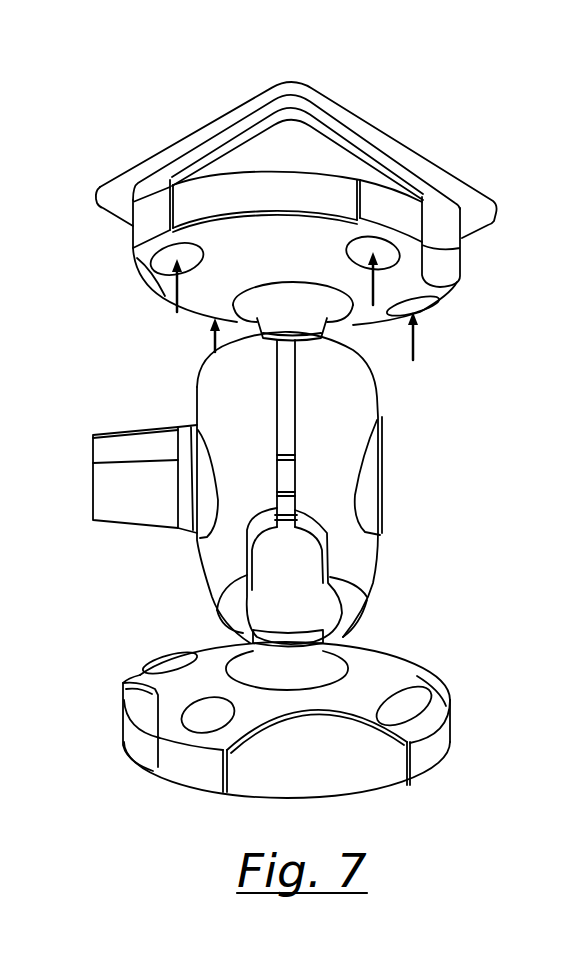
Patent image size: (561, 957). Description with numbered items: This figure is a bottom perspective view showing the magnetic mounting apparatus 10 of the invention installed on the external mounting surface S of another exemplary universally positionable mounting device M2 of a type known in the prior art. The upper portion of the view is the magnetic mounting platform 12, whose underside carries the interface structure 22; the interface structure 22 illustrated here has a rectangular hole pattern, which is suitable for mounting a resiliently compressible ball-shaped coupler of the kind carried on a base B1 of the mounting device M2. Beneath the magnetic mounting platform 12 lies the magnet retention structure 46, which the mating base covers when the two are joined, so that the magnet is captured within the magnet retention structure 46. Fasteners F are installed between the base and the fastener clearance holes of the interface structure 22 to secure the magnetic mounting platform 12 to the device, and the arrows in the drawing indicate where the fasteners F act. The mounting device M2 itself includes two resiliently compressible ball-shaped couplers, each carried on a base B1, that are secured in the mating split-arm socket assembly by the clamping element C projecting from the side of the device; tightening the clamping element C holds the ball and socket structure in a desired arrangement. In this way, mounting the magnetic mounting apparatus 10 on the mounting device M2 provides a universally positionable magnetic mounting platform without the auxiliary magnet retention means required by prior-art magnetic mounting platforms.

The magnetic mounting apparatus 10 is at (398, 86).
The magnetic mounting platform 12 is at (202, 133).
The interface structure 22 is at (393, 167).
The magnet retention structure 46 is at (300, 160).
The base B1 is at (133, 250).
The external mounting surface S is at (288, 405).
The universally positionable mounting device M2 is at (445, 424).
The clamping element C is at (153, 406).
The fasteners F is at (305, 307).